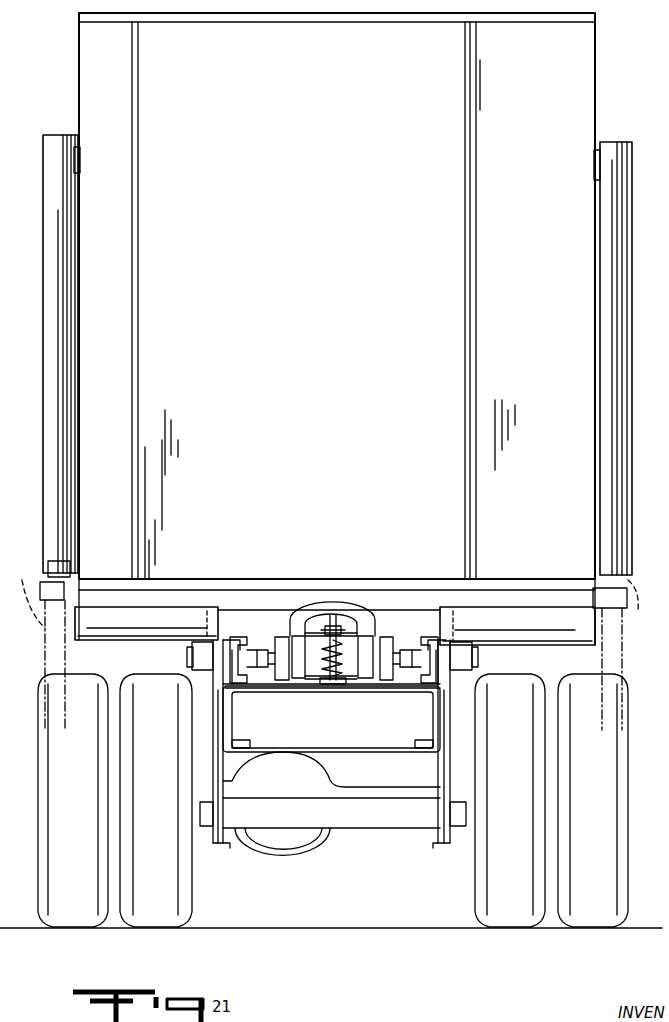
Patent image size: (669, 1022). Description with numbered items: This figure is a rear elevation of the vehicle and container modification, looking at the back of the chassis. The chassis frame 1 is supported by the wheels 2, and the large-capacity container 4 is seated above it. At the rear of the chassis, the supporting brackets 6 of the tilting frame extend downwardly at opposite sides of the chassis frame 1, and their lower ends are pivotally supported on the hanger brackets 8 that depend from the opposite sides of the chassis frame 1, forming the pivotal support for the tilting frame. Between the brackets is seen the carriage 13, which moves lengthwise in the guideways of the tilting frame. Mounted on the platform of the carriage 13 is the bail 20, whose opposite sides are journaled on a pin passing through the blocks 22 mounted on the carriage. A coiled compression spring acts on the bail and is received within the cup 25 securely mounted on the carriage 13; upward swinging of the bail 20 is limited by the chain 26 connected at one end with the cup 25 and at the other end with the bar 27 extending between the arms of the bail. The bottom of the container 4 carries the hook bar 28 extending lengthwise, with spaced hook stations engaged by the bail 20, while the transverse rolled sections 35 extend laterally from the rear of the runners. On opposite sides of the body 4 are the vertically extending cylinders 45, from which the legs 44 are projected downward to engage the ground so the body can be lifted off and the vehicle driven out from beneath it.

The chassis frame 1 is at (440, 728).
The wheels 2 is at (78, 783).
The container 4 is at (597, 64).
The supporting brackets 6 is at (210, 845).
The hanger brackets 8 is at (230, 848).
The carriage 13 is at (258, 637).
The bail 20 is at (300, 626).
The blocks 22 is at (282, 637).
The cup 25 is at (348, 678).
The chain 26 is at (333, 628).
The bar 27 is at (337, 642).
The hook bar 28 is at (340, 655).
The transverse rolled sections 35 is at (160, 630).
The legs 44 is at (48, 576).
The cylinders 45 is at (67, 283).